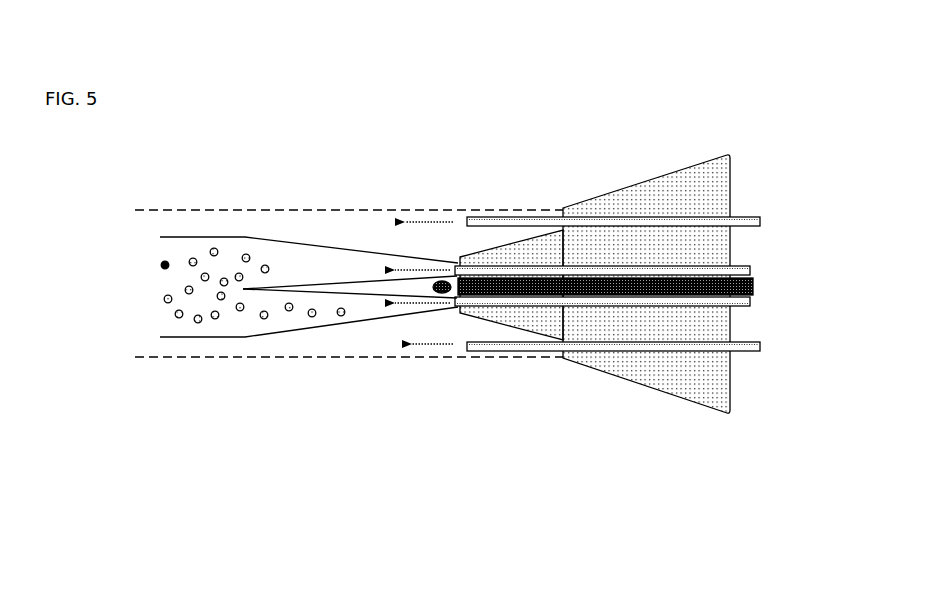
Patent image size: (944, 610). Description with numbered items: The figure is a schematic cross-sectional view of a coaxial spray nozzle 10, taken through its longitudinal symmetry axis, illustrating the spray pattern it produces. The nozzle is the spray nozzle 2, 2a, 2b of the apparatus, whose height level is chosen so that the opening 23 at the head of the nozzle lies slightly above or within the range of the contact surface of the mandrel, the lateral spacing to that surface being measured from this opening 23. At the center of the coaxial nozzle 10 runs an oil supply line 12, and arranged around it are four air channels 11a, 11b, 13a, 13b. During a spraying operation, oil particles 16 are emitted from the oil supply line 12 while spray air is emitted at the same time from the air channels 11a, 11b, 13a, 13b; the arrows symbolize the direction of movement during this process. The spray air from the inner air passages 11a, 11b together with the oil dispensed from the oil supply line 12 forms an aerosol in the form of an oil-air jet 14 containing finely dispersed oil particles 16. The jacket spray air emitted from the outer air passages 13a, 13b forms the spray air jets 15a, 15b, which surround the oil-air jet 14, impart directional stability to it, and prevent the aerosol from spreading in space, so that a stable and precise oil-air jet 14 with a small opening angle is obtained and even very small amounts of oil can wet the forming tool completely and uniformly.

The coaxial spray nozzle 10 is at (450, 160).
The spray nozzle 2 is at (595, 278).
The spray nozzle 2a is at (646, 284).
The spray nozzle 2b is at (511, 285).
The air channel 13a is at (760, 221).
The air channel 13b is at (760, 345).
The air channel 11a is at (750, 268).
The air channel 11b is at (750, 303).
The oil supply line 12 is at (753, 285).
The opening 23 is at (457, 307).
The spray air jet 15a is at (300, 223).
The spray air jet 15b is at (335, 338).
The oil-air jet 14 is at (165, 317).
The oil particles 16 is at (165, 265).